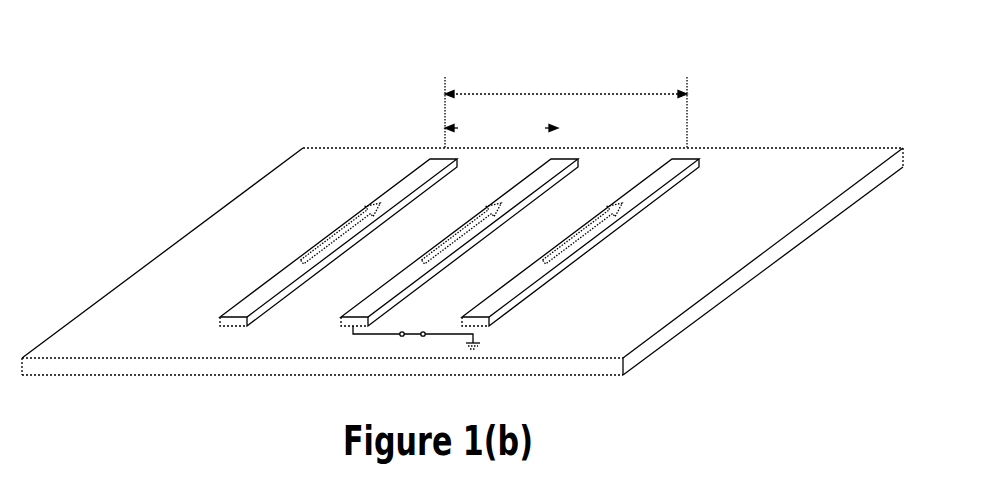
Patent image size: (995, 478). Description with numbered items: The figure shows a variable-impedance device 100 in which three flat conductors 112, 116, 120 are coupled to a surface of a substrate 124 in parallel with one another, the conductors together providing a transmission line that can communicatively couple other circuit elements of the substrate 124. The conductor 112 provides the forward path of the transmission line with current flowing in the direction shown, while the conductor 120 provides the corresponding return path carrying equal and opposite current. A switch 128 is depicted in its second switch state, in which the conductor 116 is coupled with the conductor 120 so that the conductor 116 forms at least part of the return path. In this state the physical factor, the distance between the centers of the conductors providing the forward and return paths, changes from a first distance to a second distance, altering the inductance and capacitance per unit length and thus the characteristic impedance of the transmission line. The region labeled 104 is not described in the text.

The variable-impedance device 100 is at (198, 77).
The array of resonator elements 104 is at (333, 185).
The conductor 112 is at (245, 297).
The conductor 116 is at (363, 297).
The conductor 120 is at (483, 297).
The substrate 124 is at (176, 243).
The switch 128 is at (402, 355).